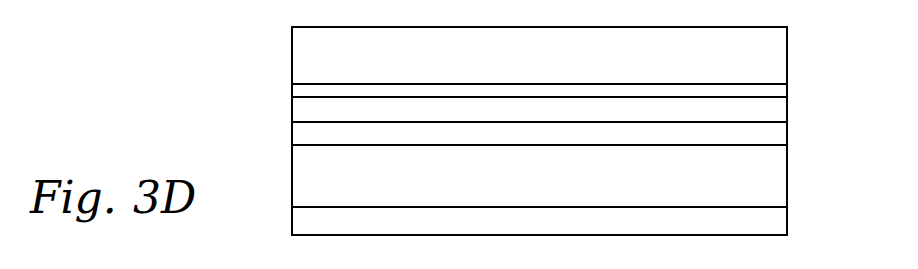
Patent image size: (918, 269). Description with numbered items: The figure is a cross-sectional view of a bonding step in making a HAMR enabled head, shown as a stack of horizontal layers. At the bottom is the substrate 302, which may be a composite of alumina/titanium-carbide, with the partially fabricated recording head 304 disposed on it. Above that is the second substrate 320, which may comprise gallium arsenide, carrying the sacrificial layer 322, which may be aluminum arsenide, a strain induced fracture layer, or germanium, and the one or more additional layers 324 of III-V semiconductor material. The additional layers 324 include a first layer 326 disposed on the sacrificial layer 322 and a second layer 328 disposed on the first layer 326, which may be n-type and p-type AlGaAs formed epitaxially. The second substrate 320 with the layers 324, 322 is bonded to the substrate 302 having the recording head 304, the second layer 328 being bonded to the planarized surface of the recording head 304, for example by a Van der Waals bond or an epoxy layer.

The second substrate 320 is at (783, 51).
The sacrificial layer 322 is at (783, 91).
The first layer 326 is at (783, 111).
The second layer 328 is at (783, 136).
The one or more additional layers 324 is at (285, 98).
The partially fabricated recording head 304 is at (783, 179).
The substrate 302 is at (783, 221).